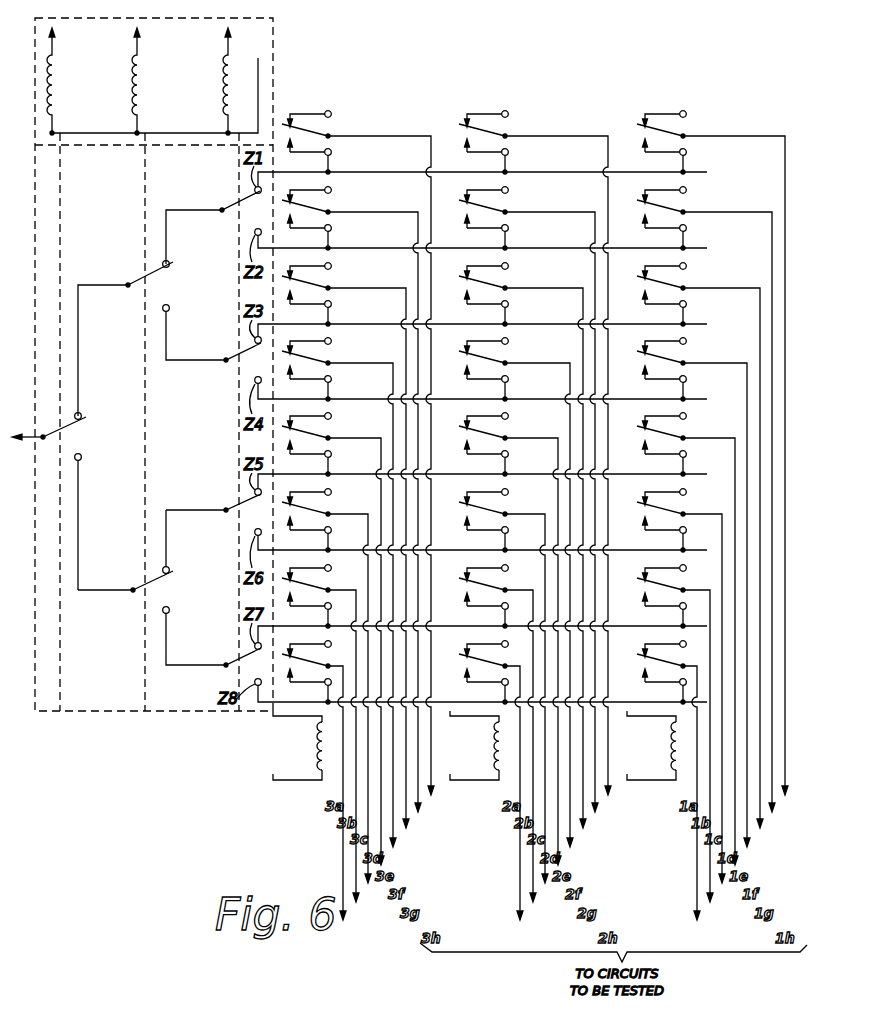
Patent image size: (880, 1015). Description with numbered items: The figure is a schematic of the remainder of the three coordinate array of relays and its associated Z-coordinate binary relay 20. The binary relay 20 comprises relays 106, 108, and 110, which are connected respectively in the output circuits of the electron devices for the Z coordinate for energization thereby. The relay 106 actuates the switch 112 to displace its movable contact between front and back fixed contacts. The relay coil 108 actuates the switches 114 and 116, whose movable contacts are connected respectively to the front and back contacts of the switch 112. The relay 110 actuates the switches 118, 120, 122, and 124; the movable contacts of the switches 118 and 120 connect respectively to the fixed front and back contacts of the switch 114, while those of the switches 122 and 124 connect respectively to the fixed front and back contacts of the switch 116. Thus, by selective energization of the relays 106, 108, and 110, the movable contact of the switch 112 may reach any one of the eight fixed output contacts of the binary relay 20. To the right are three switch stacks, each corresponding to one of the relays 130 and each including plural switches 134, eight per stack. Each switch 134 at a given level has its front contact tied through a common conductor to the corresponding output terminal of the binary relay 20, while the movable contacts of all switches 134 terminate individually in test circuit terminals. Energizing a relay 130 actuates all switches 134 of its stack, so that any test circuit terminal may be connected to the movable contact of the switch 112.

The binary relay 20 is at (308, 34).
The relay 106 is at (55, 95).
The relay coil 108 is at (141, 72).
The relay 110 is at (224, 102).
The switch 112 is at (64, 432).
The switch 114 is at (128, 280).
The switch 116 is at (138, 594).
The switch 118 is at (222, 206).
The switch 120 is at (226, 355).
The switch 122 is at (226, 505).
The switch 124 is at (232, 670).
The relay 130 is at (318, 766).
The switch 134 is at (308, 514).